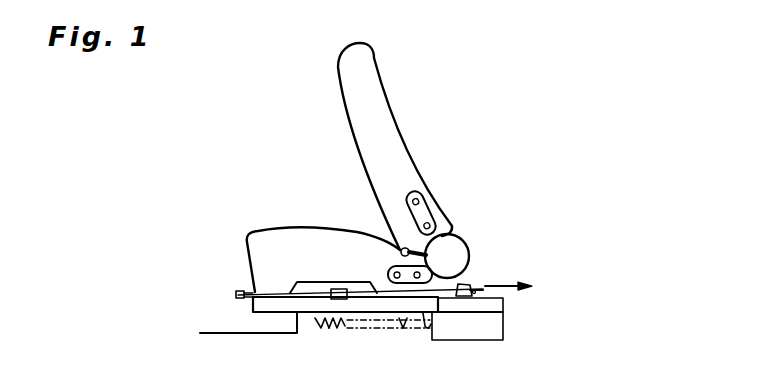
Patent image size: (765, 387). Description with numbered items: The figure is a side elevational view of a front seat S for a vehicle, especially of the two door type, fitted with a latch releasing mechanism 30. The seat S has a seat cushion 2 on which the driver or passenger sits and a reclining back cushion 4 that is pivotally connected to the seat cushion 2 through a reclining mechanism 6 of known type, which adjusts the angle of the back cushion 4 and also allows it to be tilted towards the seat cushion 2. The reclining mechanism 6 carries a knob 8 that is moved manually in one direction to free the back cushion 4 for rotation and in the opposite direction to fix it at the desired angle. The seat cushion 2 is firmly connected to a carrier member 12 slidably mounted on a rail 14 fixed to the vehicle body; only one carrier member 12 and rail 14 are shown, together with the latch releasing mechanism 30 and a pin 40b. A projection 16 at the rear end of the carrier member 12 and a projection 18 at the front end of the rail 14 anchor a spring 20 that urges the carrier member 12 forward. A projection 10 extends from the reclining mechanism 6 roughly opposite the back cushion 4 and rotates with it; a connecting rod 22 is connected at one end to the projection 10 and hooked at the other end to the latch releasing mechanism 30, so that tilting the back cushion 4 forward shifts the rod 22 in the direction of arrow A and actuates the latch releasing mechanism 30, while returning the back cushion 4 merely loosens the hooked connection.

The front seat S is at (331, 138).
The seat cushion 2 is at (280, 237).
The reclining back cushion 4 is at (367, 85).
The reclining mechanism 6 is at (448, 248).
The knob 8 is at (400, 250).
The projection 10 is at (460, 287).
The carrier member 12 is at (263, 305).
The rail 14 is at (482, 312).
The projection 16 is at (423, 317).
The projection 18 is at (317, 320).
The spring 20 is at (340, 318).
The connecting rod 22 is at (388, 298).
The latch releasing mechanism 30 is at (337, 290).
The pin 40b is at (250, 292).
The arrow A is at (508, 274).